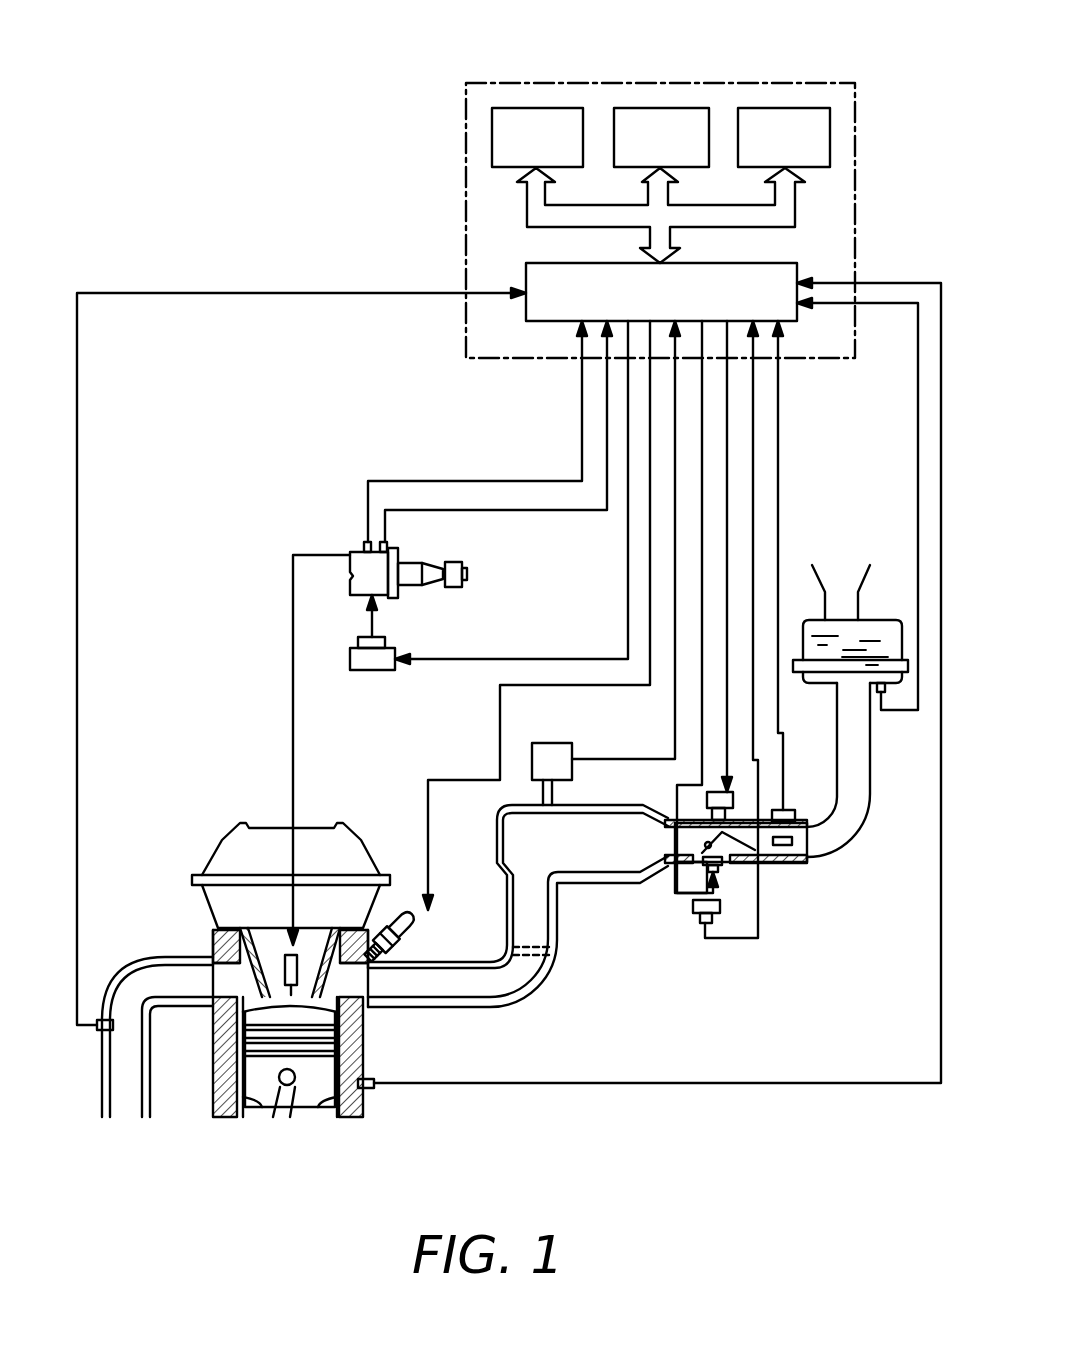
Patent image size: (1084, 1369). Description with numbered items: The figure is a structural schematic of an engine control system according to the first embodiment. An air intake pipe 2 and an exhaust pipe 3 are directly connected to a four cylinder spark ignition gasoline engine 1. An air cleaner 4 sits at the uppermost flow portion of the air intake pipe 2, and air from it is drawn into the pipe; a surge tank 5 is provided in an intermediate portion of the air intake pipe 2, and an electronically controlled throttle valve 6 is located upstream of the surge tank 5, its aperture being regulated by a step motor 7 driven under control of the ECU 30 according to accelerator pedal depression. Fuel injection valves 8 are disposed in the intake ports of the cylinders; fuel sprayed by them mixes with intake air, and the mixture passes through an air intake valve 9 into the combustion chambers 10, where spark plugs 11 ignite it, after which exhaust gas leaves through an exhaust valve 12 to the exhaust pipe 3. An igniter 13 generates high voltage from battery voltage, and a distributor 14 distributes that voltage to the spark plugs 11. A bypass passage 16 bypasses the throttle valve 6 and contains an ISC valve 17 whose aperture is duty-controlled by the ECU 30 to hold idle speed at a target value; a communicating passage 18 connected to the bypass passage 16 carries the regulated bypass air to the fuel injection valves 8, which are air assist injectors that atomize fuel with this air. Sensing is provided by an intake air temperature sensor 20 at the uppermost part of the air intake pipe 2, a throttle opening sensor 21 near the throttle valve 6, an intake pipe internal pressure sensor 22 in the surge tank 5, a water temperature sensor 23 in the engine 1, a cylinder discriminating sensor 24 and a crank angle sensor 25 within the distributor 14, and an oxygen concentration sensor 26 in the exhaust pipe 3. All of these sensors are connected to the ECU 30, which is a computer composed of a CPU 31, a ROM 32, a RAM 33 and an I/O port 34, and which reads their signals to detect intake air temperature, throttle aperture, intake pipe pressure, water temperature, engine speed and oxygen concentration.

The engine 1 is at (222, 826).
The air intake pipe 2 is at (517, 1000).
The exhaust pipe 3 is at (160, 957).
The air cleaner 4 is at (880, 620).
The surge tank 5 is at (605, 806).
The throttle valve 6 is at (763, 863).
The step motor 7 is at (737, 798).
The fuel injection valve 8 is at (440, 918).
The air intake valve 9 is at (386, 1006).
The combustion chamber 10 is at (262, 1015).
The spark plug 11 is at (314, 942).
The exhaust valve 12 is at (212, 961).
The igniter 13 is at (370, 672).
The distributor 14 is at (395, 598).
The bypass passage 16 is at (735, 868).
The ISC valve 17 is at (727, 873).
The communicating passage 18 is at (615, 884).
The intake air temperature sensor 20 is at (878, 693).
The throttle opening sensor 21 is at (695, 913).
The intake pipe internal pressure sensor 22 is at (560, 743).
The water temperature sensor 23 is at (374, 1085).
The cylinder discriminating sensor 24 is at (387, 545).
The crank angle sensor 25 is at (364, 545).
The oxygen concentration sensor 26 is at (92, 1018).
The ECU 30 is at (748, 83).
The CPU 31 is at (562, 108).
The ROM 32 is at (690, 108).
The RAM 33 is at (812, 108).
The I/O port 34 is at (526, 266).